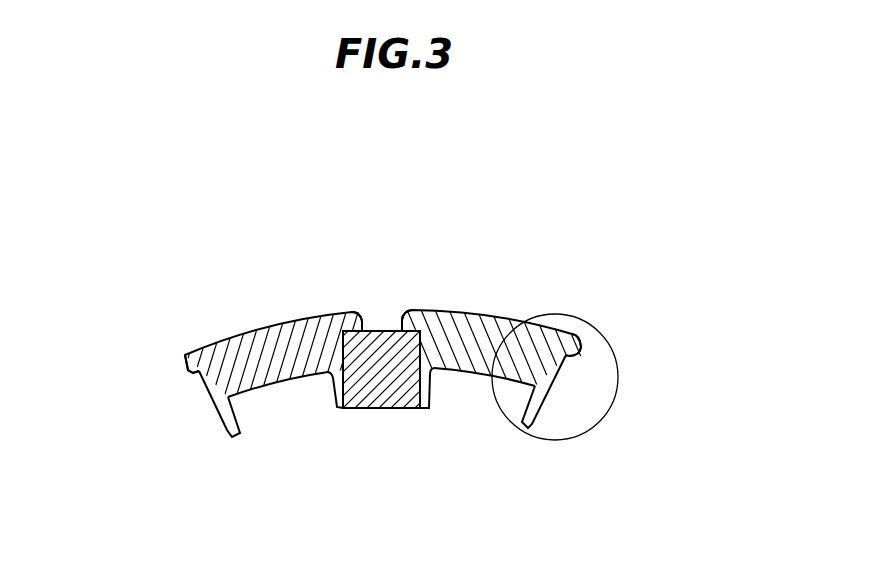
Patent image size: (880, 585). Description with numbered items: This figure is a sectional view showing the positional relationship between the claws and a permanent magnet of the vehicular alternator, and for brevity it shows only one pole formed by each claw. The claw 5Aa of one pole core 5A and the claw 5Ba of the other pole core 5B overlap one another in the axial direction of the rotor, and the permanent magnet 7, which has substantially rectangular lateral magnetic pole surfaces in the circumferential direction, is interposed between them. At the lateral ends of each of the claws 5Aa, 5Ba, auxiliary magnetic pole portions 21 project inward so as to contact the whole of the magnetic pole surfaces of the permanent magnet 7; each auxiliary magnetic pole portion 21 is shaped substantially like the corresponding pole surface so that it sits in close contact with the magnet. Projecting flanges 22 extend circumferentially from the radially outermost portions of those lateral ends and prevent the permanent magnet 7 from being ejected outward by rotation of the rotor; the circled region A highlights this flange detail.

The first stator core segment 5A is at (298, 318).
The claw 5Aa is at (237, 342).
The second stator core segment 5B is at (466, 312).
The claw 5Ba is at (480, 343).
The permanent magnet 7 is at (382, 398).
The auxiliary magnetic pole portion 21 is at (233, 432).
The projecting flange 22 is at (185, 358).
The enlarged region A is at (617, 378).